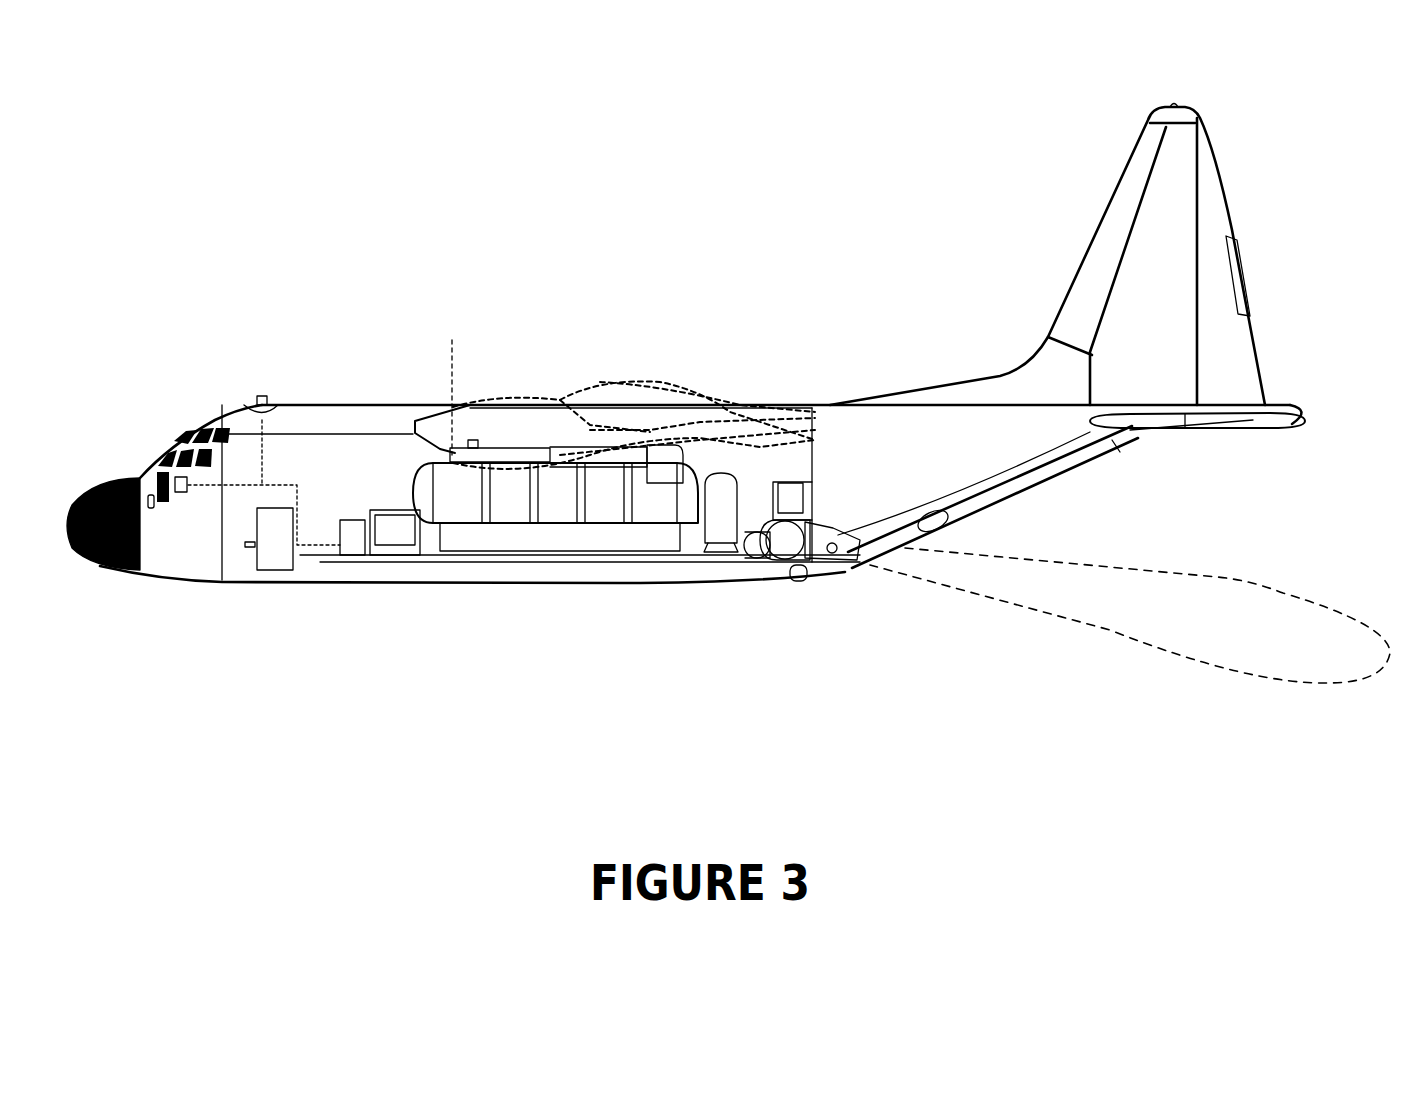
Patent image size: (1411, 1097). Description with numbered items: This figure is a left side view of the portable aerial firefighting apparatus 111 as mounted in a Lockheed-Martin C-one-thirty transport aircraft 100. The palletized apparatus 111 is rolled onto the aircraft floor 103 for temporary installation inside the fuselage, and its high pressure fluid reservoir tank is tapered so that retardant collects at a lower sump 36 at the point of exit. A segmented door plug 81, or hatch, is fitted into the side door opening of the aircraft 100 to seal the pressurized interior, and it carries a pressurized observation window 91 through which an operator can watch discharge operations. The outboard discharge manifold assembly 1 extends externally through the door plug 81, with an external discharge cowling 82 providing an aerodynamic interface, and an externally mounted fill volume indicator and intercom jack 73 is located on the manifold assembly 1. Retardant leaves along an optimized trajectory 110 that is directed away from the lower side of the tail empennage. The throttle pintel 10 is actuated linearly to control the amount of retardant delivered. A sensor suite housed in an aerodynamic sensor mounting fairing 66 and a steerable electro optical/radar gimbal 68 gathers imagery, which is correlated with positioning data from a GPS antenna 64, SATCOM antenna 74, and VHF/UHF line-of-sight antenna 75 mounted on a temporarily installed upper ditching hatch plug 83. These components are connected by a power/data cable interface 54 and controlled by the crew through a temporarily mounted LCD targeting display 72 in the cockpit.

The outboard discharge manifold assembly 1 is at (847, 552).
The pintel 10 is at (860, 545).
The lower sump 36 is at (690, 528).
The power/data cable interface 54 is at (233, 485).
The GPS antenna 64 is at (262, 396).
The aerodynamic sensor mounting fairing 66 is at (787, 577).
The steerable articulated electro optical/radar gimbal 68 is at (797, 582).
The LCD targeting display 72 is at (181, 495).
The externally mounted fill volume indicator and intercom jack 73 is at (832, 556).
The SATCOM antenna 74 is at (268, 398).
The VHF/UHF line-of-sight antenna 75 is at (258, 400).
The segmented door plug assembly 81 is at (775, 483).
The external discharge cowling 82 is at (770, 556).
The upper ditching hatch plug 83 is at (245, 403).
The observation window 91 is at (790, 497).
The Lockheed-Martin C-130 aircraft 100 is at (431, 573).
The aircraft floor 103 is at (313, 560).
The trajectory 110 is at (1110, 632).
The apparatus 111 is at (554, 505).